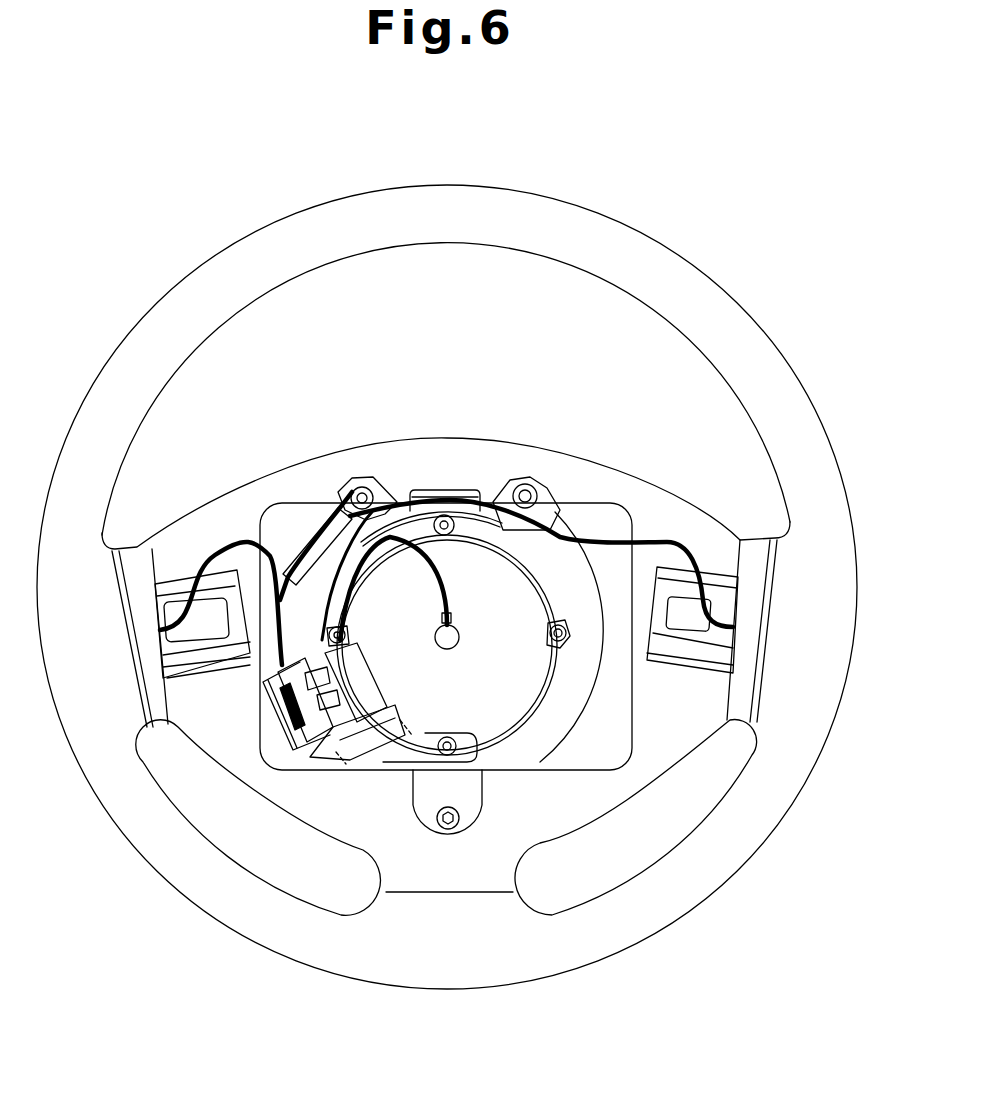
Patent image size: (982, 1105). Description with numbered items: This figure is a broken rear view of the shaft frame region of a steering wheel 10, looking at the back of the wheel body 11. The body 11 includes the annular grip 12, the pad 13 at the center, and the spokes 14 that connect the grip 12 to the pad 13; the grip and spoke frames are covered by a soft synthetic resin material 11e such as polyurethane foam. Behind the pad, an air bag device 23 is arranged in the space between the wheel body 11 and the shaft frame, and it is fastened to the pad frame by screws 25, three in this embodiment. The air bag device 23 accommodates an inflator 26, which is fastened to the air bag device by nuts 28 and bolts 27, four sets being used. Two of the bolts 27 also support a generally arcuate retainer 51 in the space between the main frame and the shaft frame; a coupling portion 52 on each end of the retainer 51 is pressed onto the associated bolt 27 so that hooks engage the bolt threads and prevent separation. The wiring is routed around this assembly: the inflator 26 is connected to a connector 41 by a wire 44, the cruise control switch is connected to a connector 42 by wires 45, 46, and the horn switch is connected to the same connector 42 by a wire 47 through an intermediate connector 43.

The steering wheel 10 is at (660, 196).
The body 11 is at (770, 337).
The soft synthetic resin material 11e is at (700, 906).
The annular grip 12 is at (447, 186).
The pad 13 is at (450, 436).
The spokes 14 is at (128, 550).
The air bag device 23 is at (596, 502).
The screws 25 is at (378, 488).
The inflator 26 is at (508, 554).
The bolts 27 is at (447, 538).
The nuts 28 is at (556, 624).
The connector 41 is at (373, 683).
The connector 42 is at (307, 750).
The intermediate connector 43 is at (312, 556).
The wire 44 is at (399, 593).
The wire 45 is at (652, 538).
The wire 46 is at (228, 545).
The wire 47 is at (347, 482).
The retainer 51 is at (360, 756).
The coupling portion 52 is at (455, 491).